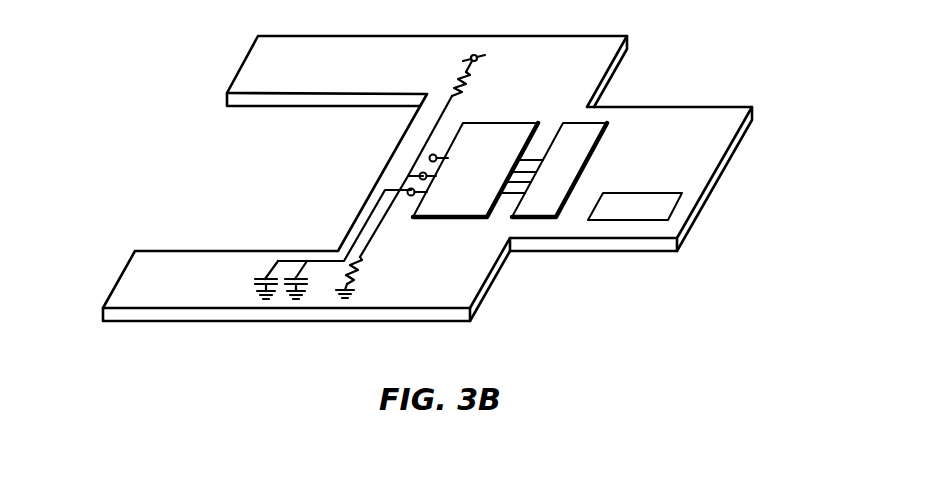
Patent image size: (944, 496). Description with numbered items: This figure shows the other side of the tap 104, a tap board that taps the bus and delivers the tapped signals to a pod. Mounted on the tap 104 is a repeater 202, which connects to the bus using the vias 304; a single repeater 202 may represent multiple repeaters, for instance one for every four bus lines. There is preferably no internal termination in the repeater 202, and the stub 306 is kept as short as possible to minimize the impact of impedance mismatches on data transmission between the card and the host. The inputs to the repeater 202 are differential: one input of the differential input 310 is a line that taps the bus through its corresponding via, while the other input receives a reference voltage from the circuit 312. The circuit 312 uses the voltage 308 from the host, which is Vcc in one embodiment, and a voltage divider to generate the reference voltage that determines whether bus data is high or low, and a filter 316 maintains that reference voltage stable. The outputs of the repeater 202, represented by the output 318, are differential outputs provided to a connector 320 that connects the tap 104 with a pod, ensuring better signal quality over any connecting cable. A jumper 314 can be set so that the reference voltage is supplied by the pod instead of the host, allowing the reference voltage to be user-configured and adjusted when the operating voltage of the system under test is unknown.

The tap 104 is at (309, 76).
The repeater 202 is at (477, 205).
The vias 304 is at (429, 159).
The stub 306 is at (410, 198).
The voltage 308 is at (478, 64).
The differential input 310 is at (448, 158).
The circuit 312 is at (419, 176).
The jumper 314 is at (645, 192).
The filter 316 is at (246, 279).
The output 318 is at (539, 160).
The connector 320 is at (578, 152).